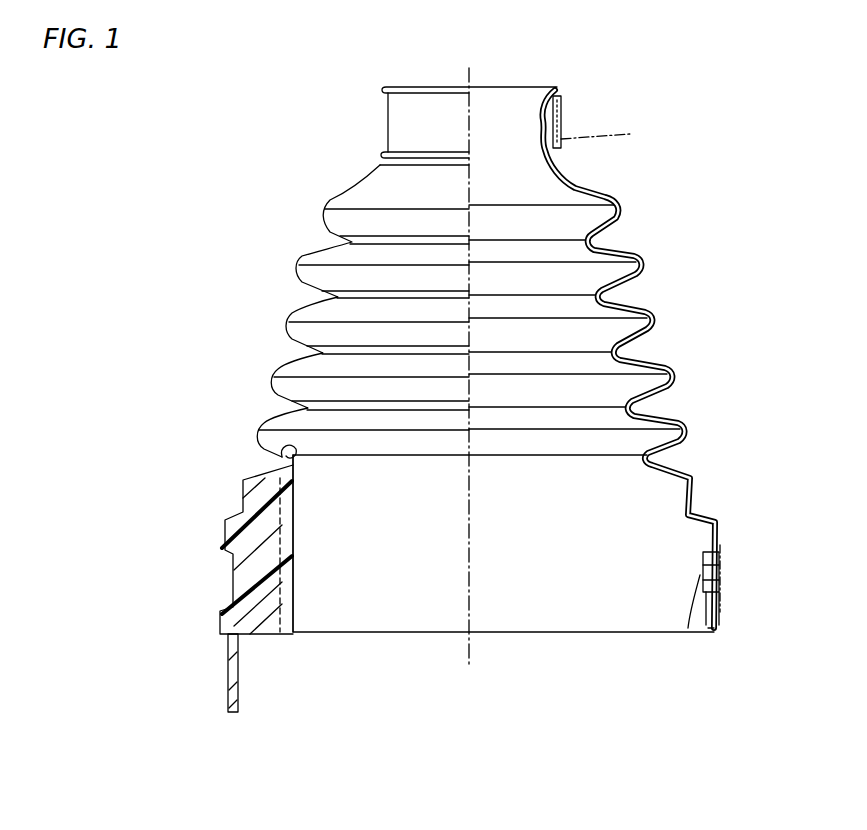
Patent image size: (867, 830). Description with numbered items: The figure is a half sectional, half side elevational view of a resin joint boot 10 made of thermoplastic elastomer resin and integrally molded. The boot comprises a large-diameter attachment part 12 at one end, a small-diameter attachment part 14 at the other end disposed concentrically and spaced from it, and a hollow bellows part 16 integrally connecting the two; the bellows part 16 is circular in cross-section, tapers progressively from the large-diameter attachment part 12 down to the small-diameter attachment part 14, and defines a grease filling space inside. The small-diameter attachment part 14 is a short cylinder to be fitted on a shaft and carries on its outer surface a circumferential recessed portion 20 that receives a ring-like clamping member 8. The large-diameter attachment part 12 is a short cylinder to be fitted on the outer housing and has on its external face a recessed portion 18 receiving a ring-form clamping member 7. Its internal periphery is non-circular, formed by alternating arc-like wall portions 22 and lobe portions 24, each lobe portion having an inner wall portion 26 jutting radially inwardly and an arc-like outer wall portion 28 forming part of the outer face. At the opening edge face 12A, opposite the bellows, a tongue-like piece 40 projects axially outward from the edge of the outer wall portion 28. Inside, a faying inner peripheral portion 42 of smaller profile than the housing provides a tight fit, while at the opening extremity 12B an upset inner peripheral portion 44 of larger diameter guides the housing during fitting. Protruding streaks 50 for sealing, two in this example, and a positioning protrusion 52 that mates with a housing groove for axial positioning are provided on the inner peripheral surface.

The joint boot 10 is at (487, 46).
The recessed portion for fixation 20 is at (388, 125).
The small-diameter attachment part 14 is at (569, 91).
The ring-like clamping member 8 is at (605, 135).
The bellows part 16 is at (654, 313).
The large-diameter attachment part 12 is at (543, 575).
The opening edge face 12A is at (555, 633).
The opening extremity 12B is at (220, 612).
The protruding streak for sealing 50 is at (702, 560).
The ring-form clamping member 7 is at (722, 557).
The recessed portion for fixation 18 is at (722, 582).
The positioning protrusion 52 is at (702, 578).
The arc-like wall portion 22 is at (716, 631).
The lobe portion 24 is at (258, 580).
The inner wall portion 26 is at (296, 502).
The outer wall portion 28 is at (225, 520).
The faying inner peripheral portion 42 is at (295, 544).
The tongue-like piece 40 is at (228, 688).
The upset inner peripheral portion 44 is at (295, 637).